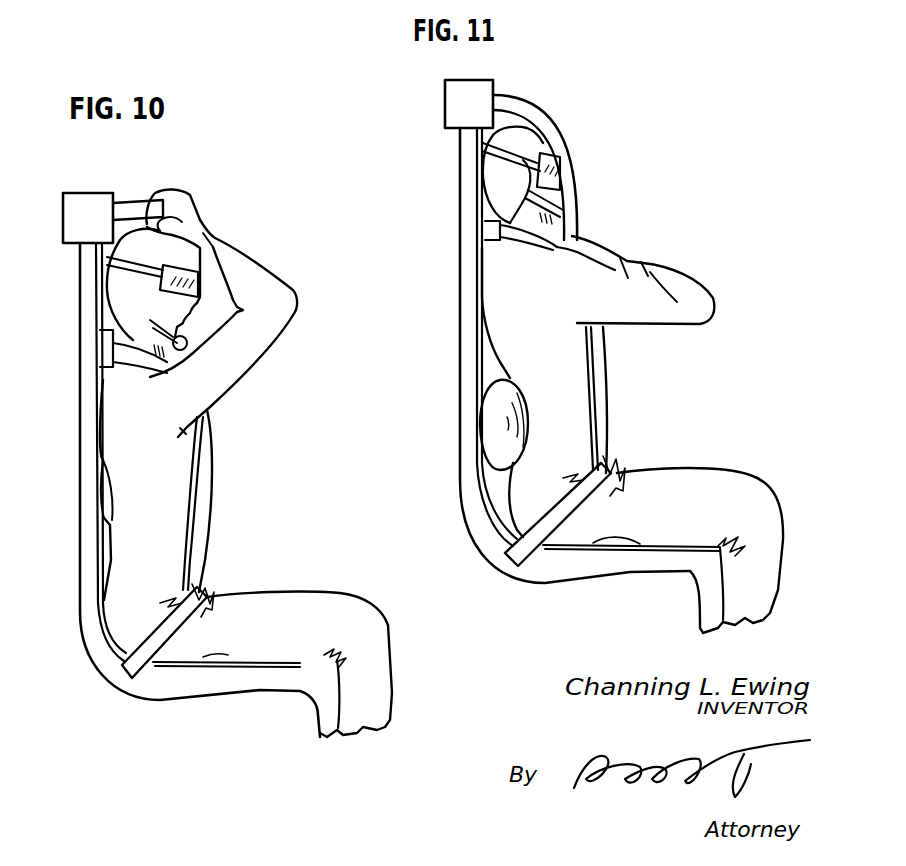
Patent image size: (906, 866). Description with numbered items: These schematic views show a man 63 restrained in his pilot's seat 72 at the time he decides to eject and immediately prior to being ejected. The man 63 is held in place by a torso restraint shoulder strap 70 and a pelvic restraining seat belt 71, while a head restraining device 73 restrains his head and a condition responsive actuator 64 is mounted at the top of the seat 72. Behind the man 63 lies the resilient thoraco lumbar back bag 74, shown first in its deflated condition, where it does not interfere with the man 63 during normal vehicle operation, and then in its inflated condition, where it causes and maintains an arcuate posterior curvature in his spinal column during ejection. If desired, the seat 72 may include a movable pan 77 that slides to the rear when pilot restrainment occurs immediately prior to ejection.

In FIG. 10, the man 63 is at (215, 456).
In FIG. 11, the man 63 is at (577, 390).
In FIG. 10, the condition responsive actuator 64 is at (132, 200).
In FIG. 11, the condition responsive actuator 64 is at (580, 213).
In FIG. 10, the torso restraint shoulder strap 70 is at (117, 340).
In FIG. 11, the torso restraint shoulder strap 70 is at (500, 218).
In FIG. 10, the pelvic restraining seat belt 71 is at (158, 633).
In FIG. 11, the pelvic restraining seat belt 71 is at (561, 498).
In FIG. 10, the seat 72 is at (191, 703).
In FIG. 11, the seat 72 is at (583, 573).
In FIG. 11, the head restraining device 73 is at (573, 154).
In FIG. 10, the resilient thoraco lumbar back bag 74 is at (112, 508).
In FIG. 11, the resilient thoraco lumbar back bag 74 is at (520, 397).
In FIG. 10, the movable pan 77 is at (252, 658).
In FIG. 11, the movable pan 77 is at (633, 547).